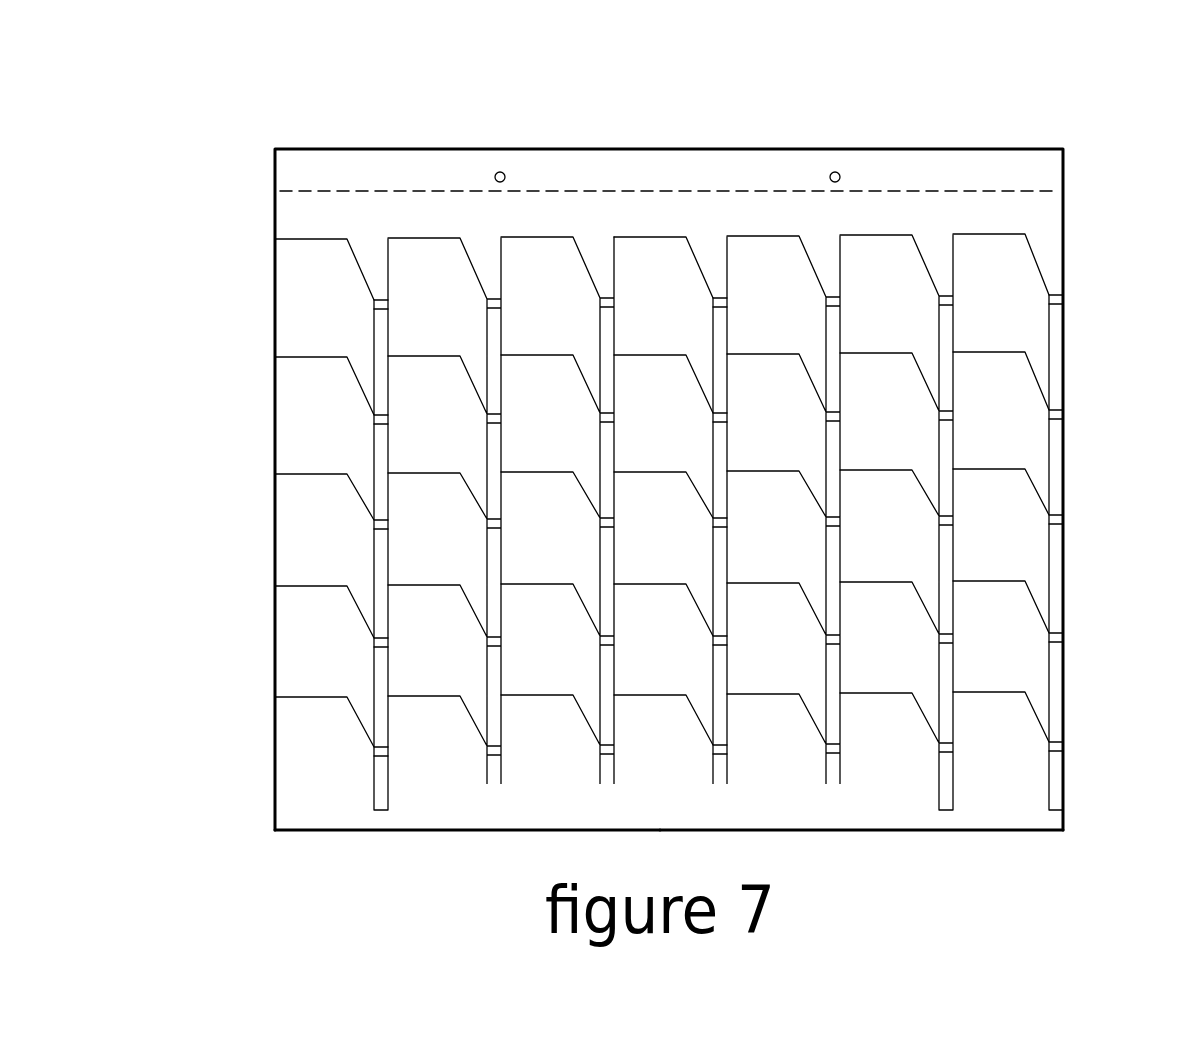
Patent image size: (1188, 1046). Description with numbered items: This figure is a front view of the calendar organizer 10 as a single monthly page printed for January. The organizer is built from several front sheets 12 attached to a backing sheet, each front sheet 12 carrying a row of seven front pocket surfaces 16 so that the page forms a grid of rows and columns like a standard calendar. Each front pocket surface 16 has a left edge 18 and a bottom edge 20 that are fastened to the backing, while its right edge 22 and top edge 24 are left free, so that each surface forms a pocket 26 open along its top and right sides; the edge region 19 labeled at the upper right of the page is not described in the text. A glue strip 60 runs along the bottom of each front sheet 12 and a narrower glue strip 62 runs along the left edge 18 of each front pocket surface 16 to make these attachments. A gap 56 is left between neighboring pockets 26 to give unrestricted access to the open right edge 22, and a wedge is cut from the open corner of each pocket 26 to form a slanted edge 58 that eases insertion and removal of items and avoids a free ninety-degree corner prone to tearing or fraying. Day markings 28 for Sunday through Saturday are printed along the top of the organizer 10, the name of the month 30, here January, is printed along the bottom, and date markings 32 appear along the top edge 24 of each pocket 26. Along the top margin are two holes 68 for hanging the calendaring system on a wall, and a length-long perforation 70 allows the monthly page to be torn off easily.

The calendar organizer 10 is at (669, 443).
The front sheet 12 is at (289, 281).
The front pocket surface 16 is at (292, 629).
The left edge 18 is at (289, 513).
The top edge of pocket column 19 is at (1054, 236).
The bottom edge 20 is at (467, 859).
The right edge 22 is at (1108, 522).
The top edge 24 is at (668, 428).
The pocket 26 is at (1058, 504).
The day markings 28 is at (608, 197).
The name of the month 30 is at (666, 838).
The date markings 32 is at (609, 487).
The gap 56 is at (737, 455).
The slanted edge 58 is at (831, 453).
The glue strip 60 is at (861, 847).
The glue strip 62 is at (290, 740).
The holes 68 is at (673, 140).
The perforation 70 is at (669, 149).